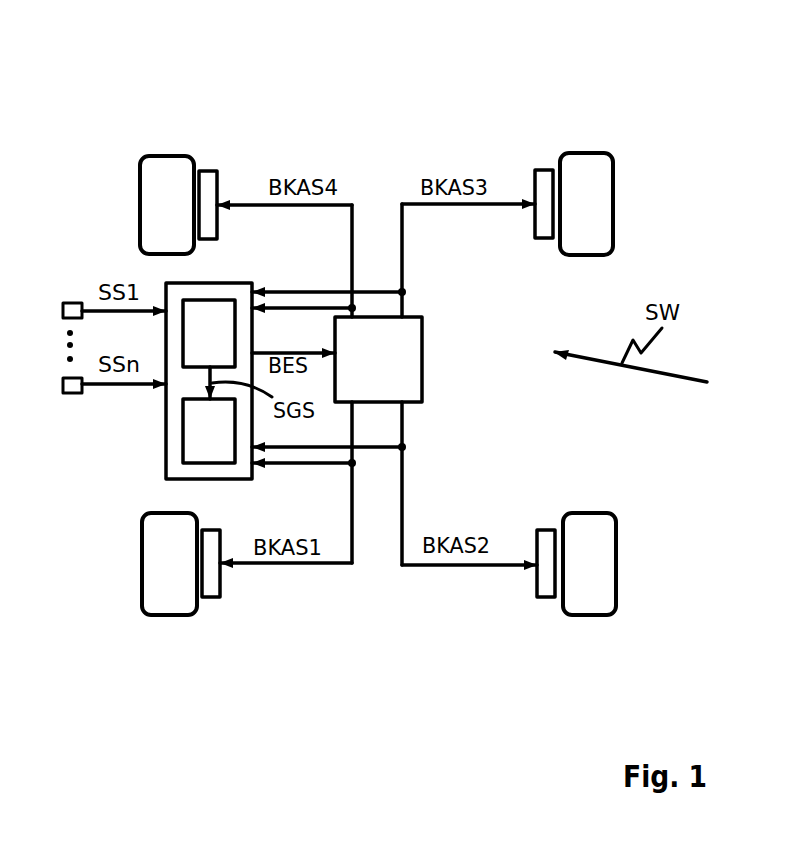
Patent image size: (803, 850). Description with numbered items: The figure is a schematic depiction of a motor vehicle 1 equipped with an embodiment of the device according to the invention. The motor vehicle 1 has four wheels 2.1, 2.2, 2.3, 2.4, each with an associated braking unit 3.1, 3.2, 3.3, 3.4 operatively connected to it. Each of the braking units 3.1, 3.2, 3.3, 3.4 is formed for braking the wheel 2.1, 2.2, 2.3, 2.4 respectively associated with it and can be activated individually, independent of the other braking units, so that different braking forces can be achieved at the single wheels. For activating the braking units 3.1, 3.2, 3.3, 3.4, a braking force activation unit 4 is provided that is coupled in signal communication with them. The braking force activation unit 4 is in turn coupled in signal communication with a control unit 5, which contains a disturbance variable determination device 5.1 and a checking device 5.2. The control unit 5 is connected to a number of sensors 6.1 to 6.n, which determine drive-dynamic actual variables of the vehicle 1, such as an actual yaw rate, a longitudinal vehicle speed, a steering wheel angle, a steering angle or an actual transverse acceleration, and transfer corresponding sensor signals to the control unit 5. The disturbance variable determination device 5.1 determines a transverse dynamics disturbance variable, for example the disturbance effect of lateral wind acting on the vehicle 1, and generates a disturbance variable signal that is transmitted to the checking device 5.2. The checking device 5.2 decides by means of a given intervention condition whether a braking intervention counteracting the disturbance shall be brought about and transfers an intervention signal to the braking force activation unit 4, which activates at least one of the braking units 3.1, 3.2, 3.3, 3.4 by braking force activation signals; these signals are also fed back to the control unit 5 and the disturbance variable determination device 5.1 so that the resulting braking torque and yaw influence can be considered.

The motor vehicle 1 is at (474, 59).
The wheel 2.1 is at (153, 602).
The wheel 2.2 is at (597, 522).
The wheel 2.3 is at (603, 170).
The wheel 2.4 is at (150, 165).
The braking unit 3.1 is at (208, 587).
The braking unit 3.2 is at (550, 532).
The braking unit 3.3 is at (545, 175).
The braking unit 3.4 is at (207, 178).
The braking force activation unit 4 is at (383, 365).
The control unit 5 is at (165, 463).
The disturbance variable determination device 5.1 is at (225, 347).
The checking device 5.2 is at (225, 450).
The sensor 6.1 is at (66, 303).
The sensor 6.n is at (68, 393).